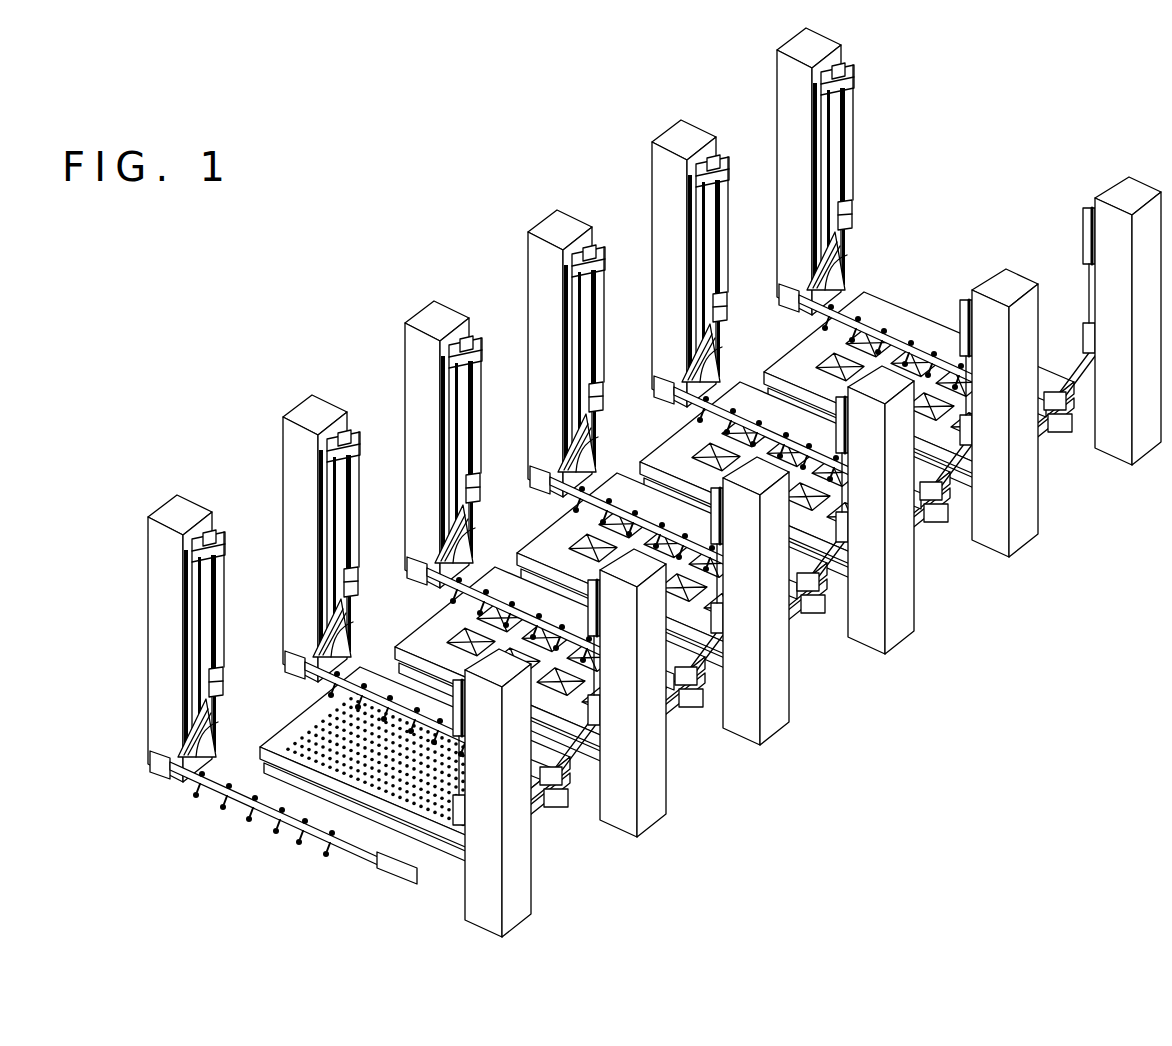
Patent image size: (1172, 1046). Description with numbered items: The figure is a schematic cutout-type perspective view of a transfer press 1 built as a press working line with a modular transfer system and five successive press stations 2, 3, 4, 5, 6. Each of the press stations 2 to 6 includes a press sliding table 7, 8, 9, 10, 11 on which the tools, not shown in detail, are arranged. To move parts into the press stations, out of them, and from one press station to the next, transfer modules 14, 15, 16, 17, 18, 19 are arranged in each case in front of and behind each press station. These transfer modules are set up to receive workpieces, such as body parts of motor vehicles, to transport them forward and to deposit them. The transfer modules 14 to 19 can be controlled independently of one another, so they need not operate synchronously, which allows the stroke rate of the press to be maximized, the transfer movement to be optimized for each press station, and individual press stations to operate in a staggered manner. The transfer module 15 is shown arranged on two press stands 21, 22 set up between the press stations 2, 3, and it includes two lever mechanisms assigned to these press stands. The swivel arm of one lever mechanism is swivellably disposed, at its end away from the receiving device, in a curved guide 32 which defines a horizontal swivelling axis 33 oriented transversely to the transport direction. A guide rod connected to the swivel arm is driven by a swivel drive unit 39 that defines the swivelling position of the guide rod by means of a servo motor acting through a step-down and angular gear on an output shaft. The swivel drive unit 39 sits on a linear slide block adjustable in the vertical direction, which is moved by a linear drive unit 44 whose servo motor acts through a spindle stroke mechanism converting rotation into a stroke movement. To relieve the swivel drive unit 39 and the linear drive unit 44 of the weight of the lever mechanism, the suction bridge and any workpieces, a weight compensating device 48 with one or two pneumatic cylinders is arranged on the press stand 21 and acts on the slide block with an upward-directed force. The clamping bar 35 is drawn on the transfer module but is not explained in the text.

The transfer press 1 is at (639, 482).
The press station 2 is at (416, 613).
The press station 3 is at (558, 549).
The press station 4 is at (672, 457).
The press station 5 is at (795, 366).
The press station 6 is at (917, 275).
The press sliding table 7 is at (415, 765).
The press sliding table 8 is at (543, 665).
The press sliding table 9 is at (670, 571).
The press sliding table 10 is at (788, 480).
The press sliding table 11 is at (915, 390).
The transfer module 14 is at (283, 825).
The transfer module 15 is at (405, 810).
The transfer module 16 is at (543, 659).
The transfer module 17 is at (596, 542).
The transfer module 18 is at (718, 454).
The transfer module 19 is at (914, 384).
The press stand 21 is at (165, 513).
The press stand 22 is at (523, 897).
The curved guide 32 is at (233, 738).
The horizontal swivelling axis 33 is at (247, 788).
The clamping bar 35 is at (380, 683).
The swivel drive unit 39 is at (360, 567).
The linear drive unit 44 is at (368, 472).
The weight compensating device 48 is at (360, 428).